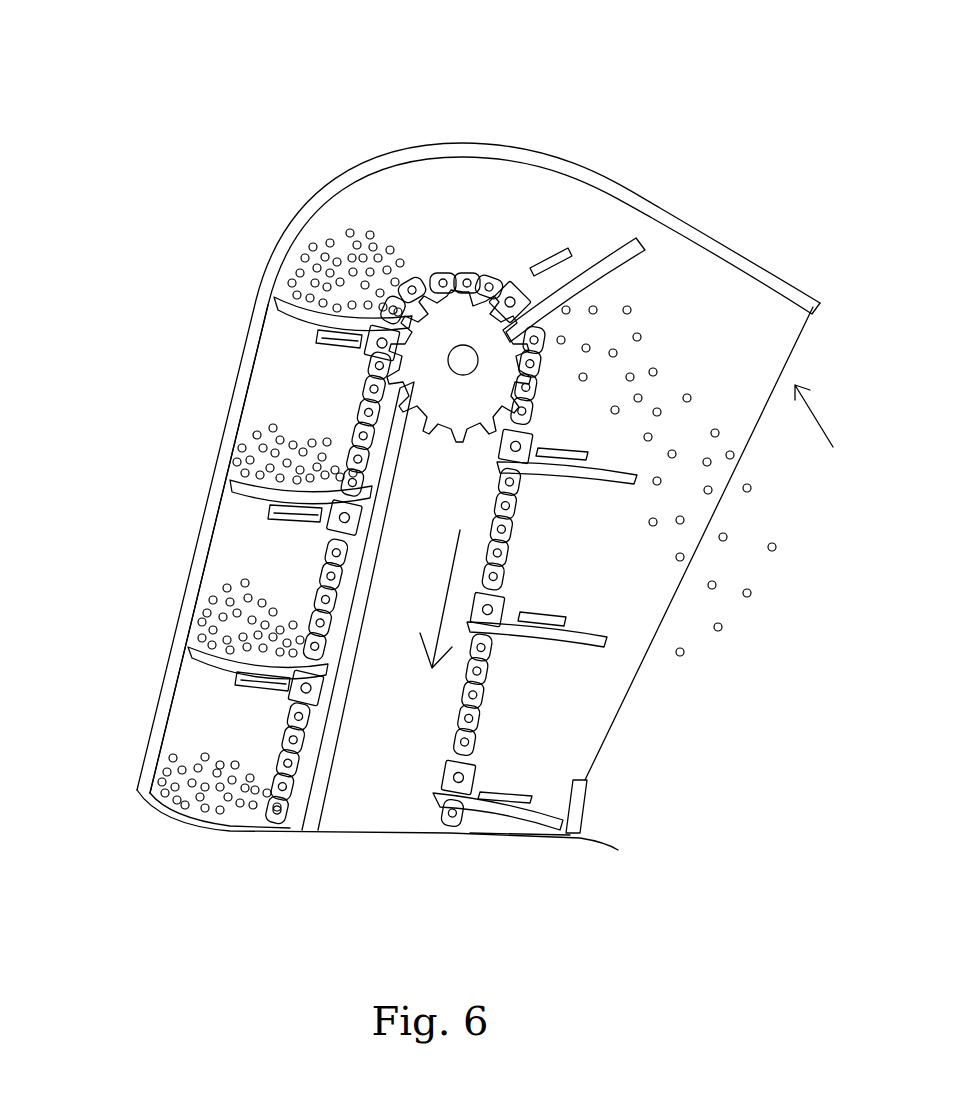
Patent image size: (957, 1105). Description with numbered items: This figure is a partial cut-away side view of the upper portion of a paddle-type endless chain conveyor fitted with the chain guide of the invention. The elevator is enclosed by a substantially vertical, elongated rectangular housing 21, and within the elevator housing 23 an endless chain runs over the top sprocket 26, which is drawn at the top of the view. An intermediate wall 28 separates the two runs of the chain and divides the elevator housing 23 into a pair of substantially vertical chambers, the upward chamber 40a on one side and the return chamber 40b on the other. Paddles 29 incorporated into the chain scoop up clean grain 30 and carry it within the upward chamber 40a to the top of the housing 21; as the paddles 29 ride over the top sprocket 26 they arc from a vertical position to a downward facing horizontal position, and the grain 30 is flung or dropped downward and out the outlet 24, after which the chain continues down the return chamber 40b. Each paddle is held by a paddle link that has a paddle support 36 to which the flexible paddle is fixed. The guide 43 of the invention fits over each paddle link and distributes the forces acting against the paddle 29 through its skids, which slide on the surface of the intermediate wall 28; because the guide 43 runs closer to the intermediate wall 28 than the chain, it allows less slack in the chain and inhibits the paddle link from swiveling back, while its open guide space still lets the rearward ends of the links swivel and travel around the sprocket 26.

The housing 21 is at (185, 590).
The elevator housing 23 is at (413, 147).
The outlet 24 is at (827, 435).
The top sprocket 26 is at (443, 313).
The intermediate wall 28 is at (325, 768).
The paddles 29 is at (588, 447).
The clean grain 30 is at (712, 588).
The paddle support 36 is at (290, 697).
The upward chamber 40a is at (227, 732).
The return chamber 40b is at (487, 823).
The guide 43 is at (507, 297).